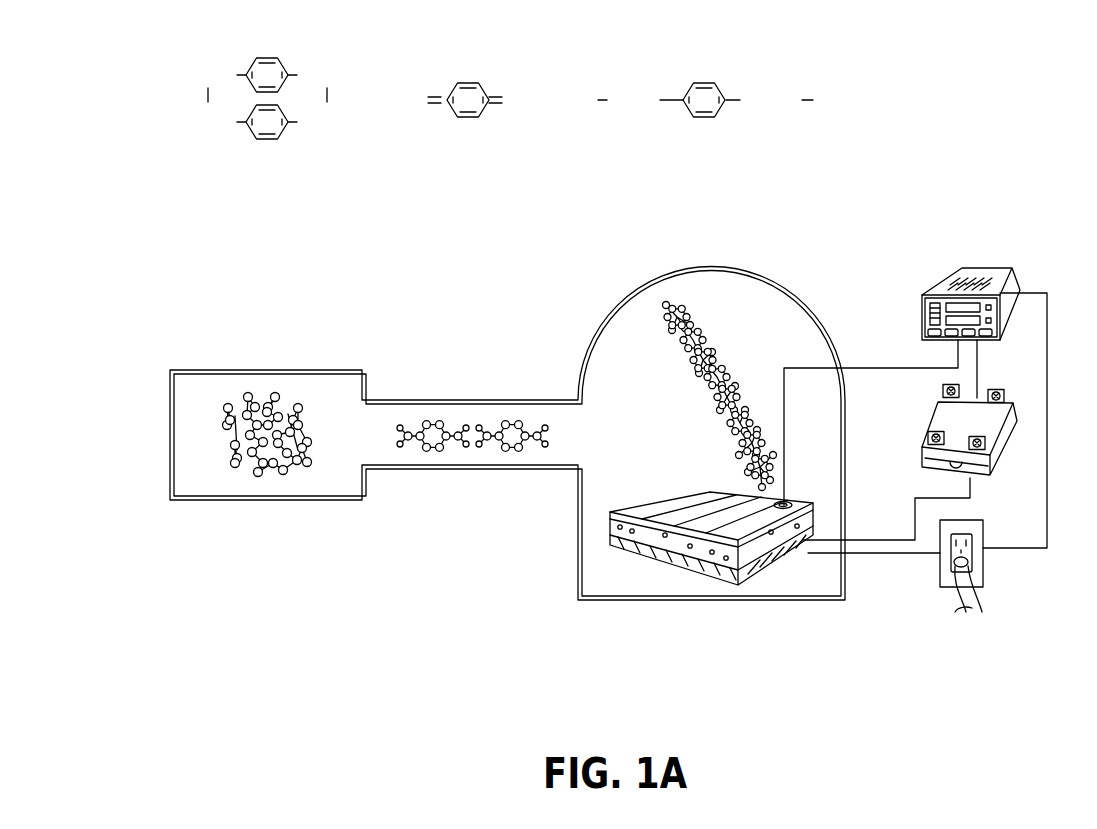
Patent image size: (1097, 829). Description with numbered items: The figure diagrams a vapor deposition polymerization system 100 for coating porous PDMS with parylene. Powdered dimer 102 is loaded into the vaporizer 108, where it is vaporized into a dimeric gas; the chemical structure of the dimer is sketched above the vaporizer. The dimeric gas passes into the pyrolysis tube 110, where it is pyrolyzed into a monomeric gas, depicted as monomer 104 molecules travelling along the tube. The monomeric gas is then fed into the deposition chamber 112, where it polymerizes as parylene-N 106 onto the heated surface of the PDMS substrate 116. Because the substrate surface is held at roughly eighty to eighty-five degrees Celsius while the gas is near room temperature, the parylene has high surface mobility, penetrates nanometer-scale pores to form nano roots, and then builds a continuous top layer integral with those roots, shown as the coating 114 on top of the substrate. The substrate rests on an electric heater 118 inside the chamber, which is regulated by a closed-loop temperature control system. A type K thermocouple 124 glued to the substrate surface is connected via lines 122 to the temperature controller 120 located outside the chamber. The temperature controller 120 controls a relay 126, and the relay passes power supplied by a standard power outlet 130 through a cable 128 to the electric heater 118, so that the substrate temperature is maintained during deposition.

The vapor deposition polymerization system 100 is at (156, 73).
The powdered dimer 102 is at (223, 397).
The monomer 104 is at (395, 420).
The parylene-N polymer 106 is at (660, 326).
The vaporizer 108 is at (240, 503).
The pyrolysis tube 110 is at (427, 470).
The deposition chamber 112 is at (636, 602).
The coating 114 is at (665, 505).
The PDMS substrate 116 is at (704, 562).
The electric heater 118 is at (750, 580).
The temperature controller 120 is at (1013, 272).
The lines 122 is at (878, 366).
The type K thermocouple 124 is at (787, 503).
The relay 126 is at (935, 418).
The cable 128 is at (876, 538).
The standard power outlet 130 is at (985, 572).